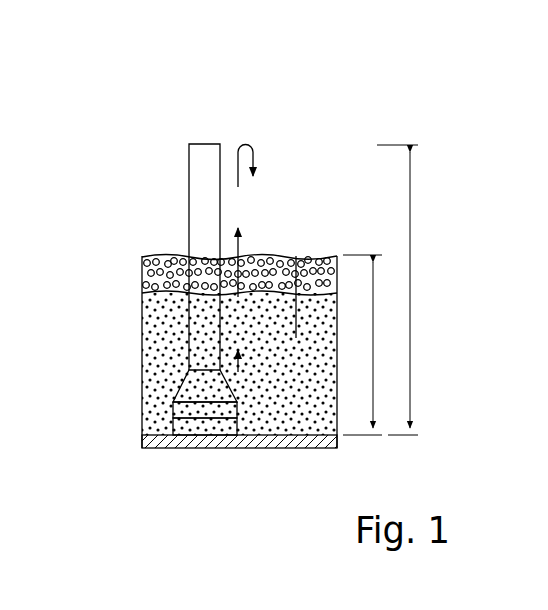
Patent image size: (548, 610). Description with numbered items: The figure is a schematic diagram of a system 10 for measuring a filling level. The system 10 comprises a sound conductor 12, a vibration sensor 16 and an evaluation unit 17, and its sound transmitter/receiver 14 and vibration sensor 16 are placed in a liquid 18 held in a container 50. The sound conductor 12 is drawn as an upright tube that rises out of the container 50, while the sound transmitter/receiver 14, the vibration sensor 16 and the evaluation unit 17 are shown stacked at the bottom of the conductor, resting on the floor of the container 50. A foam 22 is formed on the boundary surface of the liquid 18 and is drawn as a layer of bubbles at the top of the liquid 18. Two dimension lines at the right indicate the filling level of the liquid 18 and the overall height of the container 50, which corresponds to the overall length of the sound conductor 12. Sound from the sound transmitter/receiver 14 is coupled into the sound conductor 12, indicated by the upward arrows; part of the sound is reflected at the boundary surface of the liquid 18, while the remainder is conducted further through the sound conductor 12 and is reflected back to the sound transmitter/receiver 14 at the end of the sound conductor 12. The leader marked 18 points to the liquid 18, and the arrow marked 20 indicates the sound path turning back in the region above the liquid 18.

The system for measuring a filling level 10 is at (170, 118).
The sound conductor 12 is at (206, 183).
The sound transmitter/receiver 14 is at (175, 407).
The vibration sensor 16 is at (193, 383).
The evaluation unit 17 is at (178, 425).
The liquid 18 is at (296, 256).
The gas flow 20 is at (268, 219).
The foam 22 is at (157, 272).
The container 50 is at (170, 440).